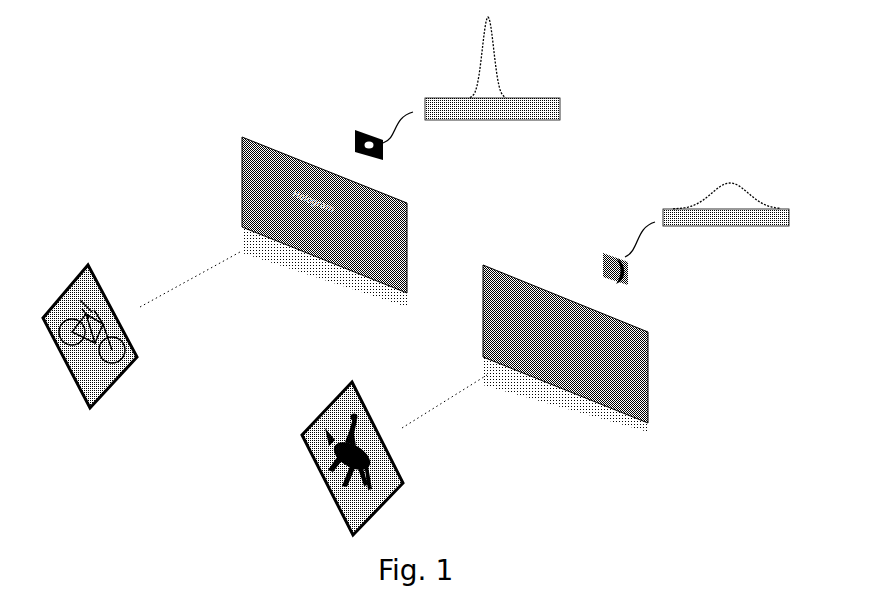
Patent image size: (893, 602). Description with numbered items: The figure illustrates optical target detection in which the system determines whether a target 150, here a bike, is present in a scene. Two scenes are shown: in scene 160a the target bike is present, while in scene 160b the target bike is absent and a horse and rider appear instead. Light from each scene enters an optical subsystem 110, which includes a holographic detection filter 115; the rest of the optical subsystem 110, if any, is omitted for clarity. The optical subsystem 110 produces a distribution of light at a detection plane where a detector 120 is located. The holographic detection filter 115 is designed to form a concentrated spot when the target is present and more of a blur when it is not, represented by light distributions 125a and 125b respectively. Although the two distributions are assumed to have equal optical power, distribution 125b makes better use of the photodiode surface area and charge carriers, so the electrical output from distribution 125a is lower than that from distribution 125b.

The optical subsystem 110 is at (651, 321).
The holographic detection filter 115 is at (648, 378).
The detector 120 is at (630, 278).
The light distribution 125a is at (492, 68).
The light distribution 125b is at (741, 195).
The target 150 is at (139, 350).
The scene 160a is at (151, 392).
The scene 160b is at (419, 495).